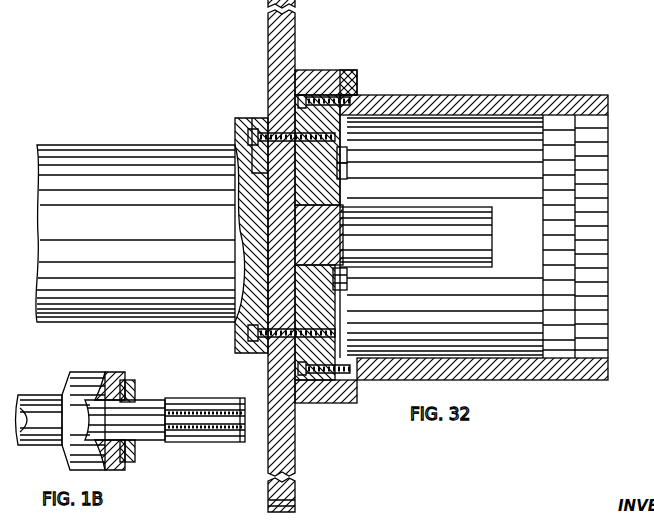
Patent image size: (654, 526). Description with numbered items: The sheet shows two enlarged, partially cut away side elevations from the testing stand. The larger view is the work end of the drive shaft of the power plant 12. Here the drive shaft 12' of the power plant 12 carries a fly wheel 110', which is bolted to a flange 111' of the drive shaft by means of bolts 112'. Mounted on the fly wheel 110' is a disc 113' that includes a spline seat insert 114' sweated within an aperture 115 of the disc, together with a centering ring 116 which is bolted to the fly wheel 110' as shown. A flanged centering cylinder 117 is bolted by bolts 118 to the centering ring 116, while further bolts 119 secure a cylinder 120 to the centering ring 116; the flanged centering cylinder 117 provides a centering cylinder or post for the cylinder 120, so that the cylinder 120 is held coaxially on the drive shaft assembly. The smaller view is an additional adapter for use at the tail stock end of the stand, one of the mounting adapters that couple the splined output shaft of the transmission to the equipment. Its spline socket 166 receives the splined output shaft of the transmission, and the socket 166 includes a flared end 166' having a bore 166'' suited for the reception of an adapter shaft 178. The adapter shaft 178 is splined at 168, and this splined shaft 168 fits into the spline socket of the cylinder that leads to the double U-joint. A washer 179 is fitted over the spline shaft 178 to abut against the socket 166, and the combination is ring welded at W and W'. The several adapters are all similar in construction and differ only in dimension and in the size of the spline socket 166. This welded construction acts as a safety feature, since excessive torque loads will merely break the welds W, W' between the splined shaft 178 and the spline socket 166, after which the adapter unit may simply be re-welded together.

In FIG. 32, the power plant 12 is at (135, 220).
In FIG. 32, the drive shaft 12' is at (105, 220).
In FIG. 32, the fly wheel 110' is at (309, 256).
In FIG. 32, the flange 111' is at (240, 218).
In FIG. 32, the bolts 112' is at (254, 132).
In FIG. 32, the disc 113' is at (363, 146).
In FIG. 32, the spline seat insert 114' is at (365, 165).
In FIG. 32, the aperture 115 is at (348, 290).
In FIG. 32, the centering ring 116 is at (332, 72).
In FIG. 32, the flanged centering cylinder 117 is at (466, 267).
In FIG. 32, the bolts 118 is at (318, 237).
In FIG. 32, the bolts 119 is at (357, 82).
In FIG. 32, the cylinder 120 is at (518, 96).
In FIG. 1B, the spline socket 166 is at (39, 398).
In FIG. 1B, the flared end 166' is at (93, 403).
In FIG. 1B, the bore 166'' is at (150, 414).
In FIG. 1B, the ring weld W is at (133, 376).
In FIG. 1B, the ring weld W' is at (152, 421).
In FIG. 1B, the splined shaft 168 is at (188, 404).
In FIG. 1B, the adapter shaft 178 is at (158, 436).
In FIG. 1B, the washer 179 is at (128, 466).